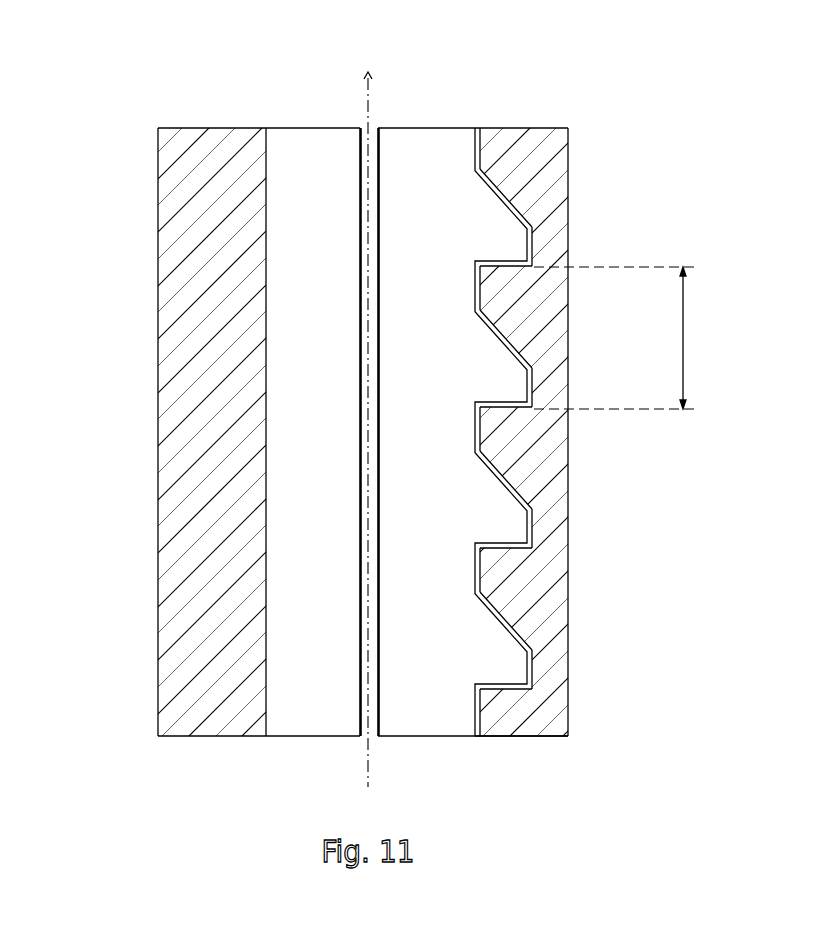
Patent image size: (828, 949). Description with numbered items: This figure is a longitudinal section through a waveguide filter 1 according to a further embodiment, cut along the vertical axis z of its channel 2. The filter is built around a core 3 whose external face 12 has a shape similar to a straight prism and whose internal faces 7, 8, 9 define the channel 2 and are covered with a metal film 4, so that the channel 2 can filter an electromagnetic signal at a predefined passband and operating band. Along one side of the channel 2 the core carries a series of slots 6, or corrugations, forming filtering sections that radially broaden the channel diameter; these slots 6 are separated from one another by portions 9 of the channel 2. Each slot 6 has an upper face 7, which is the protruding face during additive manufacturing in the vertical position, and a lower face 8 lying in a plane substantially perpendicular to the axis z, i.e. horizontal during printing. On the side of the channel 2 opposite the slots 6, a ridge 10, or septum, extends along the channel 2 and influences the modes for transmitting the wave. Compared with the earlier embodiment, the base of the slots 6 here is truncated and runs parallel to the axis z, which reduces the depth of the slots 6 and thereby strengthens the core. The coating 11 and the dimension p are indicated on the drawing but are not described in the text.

The waveguide filter 1 is at (110, 718).
The channel 2 is at (297, 140).
The core 3 is at (518, 140).
The metal film 4 is at (477, 738).
The slots 6 is at (480, 247).
The upper face 7 is at (487, 322).
The lower face 8 is at (474, 262).
The portions 9 is at (473, 289).
The ridge 10 is at (380, 140).
The coating layer 11 is at (535, 380).
The external face 12 is at (170, 593).
The pitch p is at (620, 338).